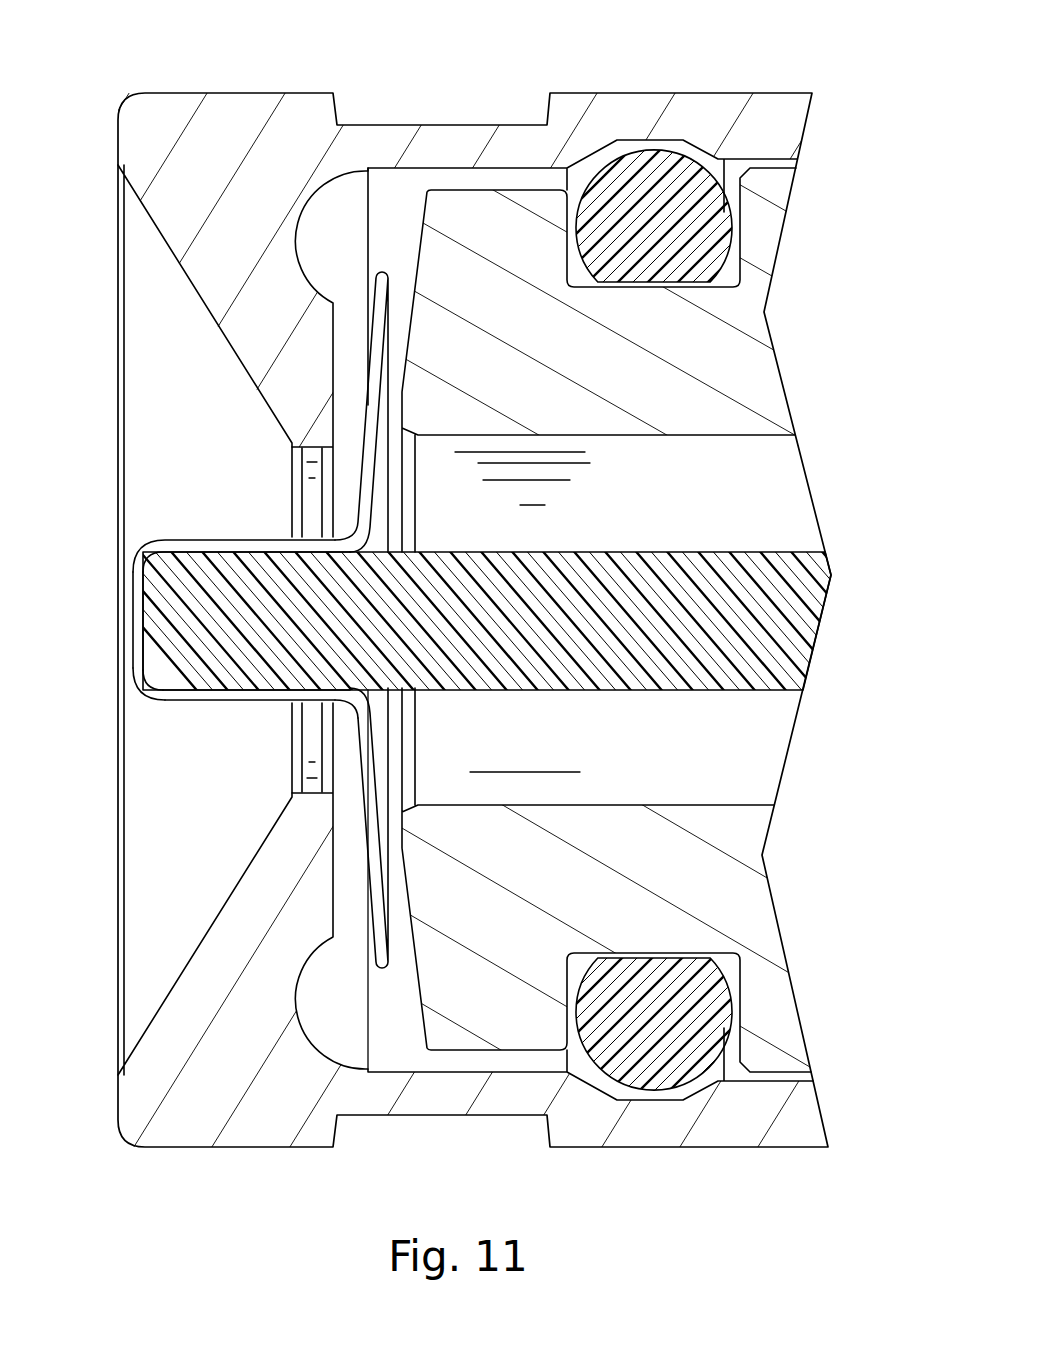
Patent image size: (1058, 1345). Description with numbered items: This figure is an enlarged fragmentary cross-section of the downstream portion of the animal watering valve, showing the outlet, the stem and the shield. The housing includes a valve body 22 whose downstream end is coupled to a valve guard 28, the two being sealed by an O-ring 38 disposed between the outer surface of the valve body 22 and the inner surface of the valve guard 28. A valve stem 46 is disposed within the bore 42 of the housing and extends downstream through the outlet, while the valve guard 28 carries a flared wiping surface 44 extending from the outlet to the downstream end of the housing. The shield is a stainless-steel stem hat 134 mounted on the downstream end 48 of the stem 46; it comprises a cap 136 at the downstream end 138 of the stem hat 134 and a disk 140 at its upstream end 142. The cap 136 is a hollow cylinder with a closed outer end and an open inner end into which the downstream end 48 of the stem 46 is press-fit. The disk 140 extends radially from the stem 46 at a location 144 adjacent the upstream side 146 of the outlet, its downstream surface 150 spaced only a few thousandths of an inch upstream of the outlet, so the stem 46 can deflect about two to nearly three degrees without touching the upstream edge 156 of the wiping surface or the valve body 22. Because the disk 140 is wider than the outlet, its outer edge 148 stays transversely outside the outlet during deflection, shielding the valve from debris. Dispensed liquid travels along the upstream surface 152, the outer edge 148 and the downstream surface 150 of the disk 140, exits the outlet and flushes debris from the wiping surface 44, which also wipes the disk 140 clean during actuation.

The valve body 22 is at (488, 210).
The valve guard 28 is at (262, 1118).
The O-ring 38 is at (693, 193).
The bore 42 is at (765, 493).
The flared wiping surface 44 is at (185, 228).
The valve stem 46 is at (790, 652).
The downstream end of the stem 48 is at (133, 588).
The stem hat 134 is at (218, 699).
The cap 136 is at (202, 545).
The downstream end of the stem hat 138 is at (135, 665).
The disk 140 is at (352, 705).
The upstream end of the stem hat 142 is at (363, 781).
The location 144 is at (348, 528).
The upstream side of the outlet 146 is at (342, 752).
The outer edge of the disk 148 is at (378, 277).
The downstream surface of the disk 150 is at (368, 300).
The upstream surface of the disk 152 is at (393, 950).
The upstream edge of the wiping surface 156 is at (275, 418).